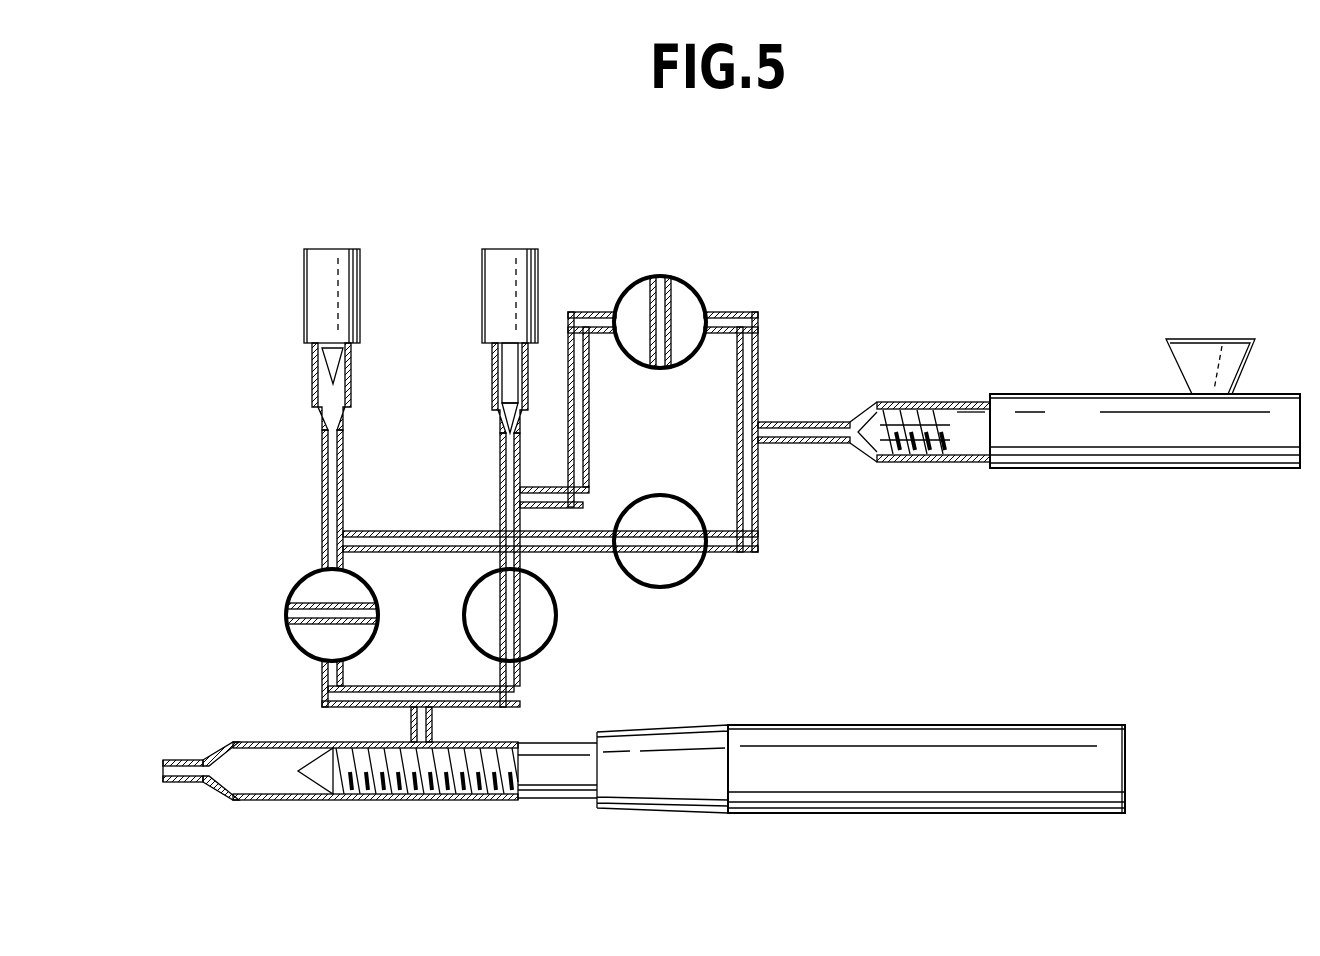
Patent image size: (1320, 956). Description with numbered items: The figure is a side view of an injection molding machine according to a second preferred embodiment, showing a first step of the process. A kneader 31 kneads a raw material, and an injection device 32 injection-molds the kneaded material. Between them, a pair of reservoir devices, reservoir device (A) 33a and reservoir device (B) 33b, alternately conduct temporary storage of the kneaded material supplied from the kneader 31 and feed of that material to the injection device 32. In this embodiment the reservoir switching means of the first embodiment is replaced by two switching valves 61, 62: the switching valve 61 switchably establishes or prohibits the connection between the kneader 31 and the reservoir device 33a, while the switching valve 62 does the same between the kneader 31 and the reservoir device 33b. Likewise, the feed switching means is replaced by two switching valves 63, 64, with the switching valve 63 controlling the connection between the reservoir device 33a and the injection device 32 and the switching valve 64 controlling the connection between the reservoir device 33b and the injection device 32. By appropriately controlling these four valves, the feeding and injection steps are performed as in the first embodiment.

The kneader 31 is at (1073, 394).
The injection device 32 is at (927, 725).
The reservoir device (A) 33a is at (508, 250).
The reservoir device (B) 33b is at (333, 250).
The switching valve 61 is at (689, 288).
The switching valve (directional control valve) 62 is at (695, 574).
The switching valve (directional control valve) 63 is at (548, 642).
The switching valve 64 is at (288, 640).